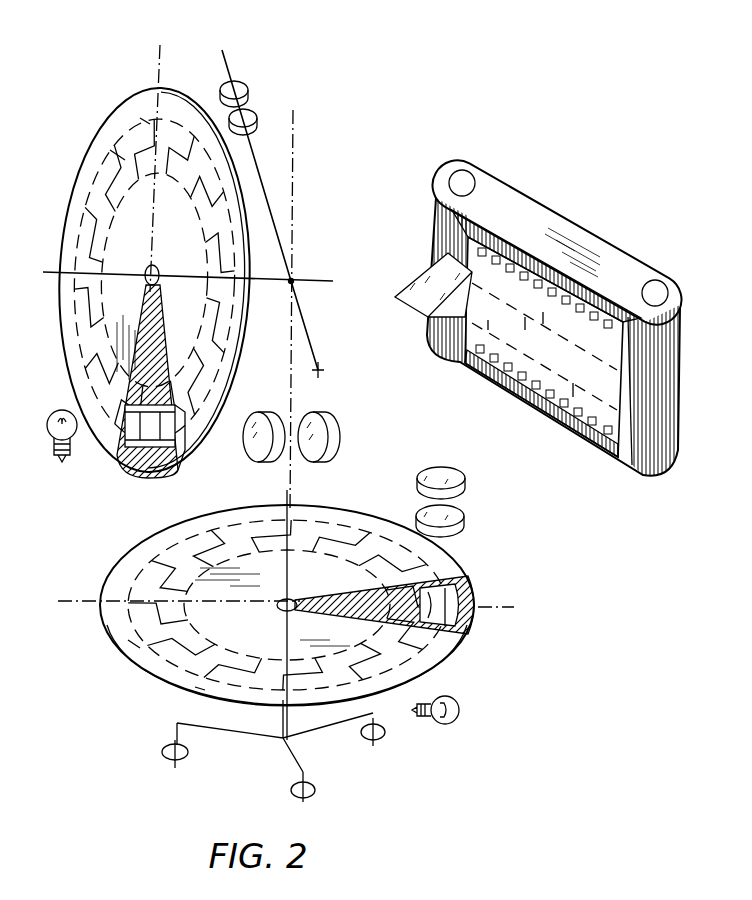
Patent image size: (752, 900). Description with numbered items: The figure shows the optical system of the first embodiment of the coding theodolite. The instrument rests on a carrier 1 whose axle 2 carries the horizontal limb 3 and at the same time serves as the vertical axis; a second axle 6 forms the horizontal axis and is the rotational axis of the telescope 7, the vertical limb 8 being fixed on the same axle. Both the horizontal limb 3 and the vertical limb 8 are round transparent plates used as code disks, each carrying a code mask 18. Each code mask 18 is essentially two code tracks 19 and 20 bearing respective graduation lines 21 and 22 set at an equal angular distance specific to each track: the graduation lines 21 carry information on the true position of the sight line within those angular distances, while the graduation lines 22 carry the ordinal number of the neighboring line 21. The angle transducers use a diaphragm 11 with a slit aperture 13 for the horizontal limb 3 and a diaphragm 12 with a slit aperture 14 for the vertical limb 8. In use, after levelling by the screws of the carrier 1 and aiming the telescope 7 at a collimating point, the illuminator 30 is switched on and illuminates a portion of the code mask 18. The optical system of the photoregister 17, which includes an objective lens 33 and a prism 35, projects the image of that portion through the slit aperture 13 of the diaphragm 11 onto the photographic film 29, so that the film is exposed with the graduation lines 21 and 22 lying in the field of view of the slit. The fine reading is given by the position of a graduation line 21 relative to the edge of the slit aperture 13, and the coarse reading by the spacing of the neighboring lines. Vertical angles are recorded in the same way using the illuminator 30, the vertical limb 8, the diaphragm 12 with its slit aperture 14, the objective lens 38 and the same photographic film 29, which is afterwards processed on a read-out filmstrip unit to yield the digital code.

The carrier 1 is at (261, 740).
The axle 2 is at (287, 722).
The horizontal limb 3 is at (452, 647).
The axle 6 is at (307, 273).
The telescope 7 is at (258, 150).
The vertical limb 8 is at (72, 323).
The diaphragm 11 is at (480, 582).
The diaphragm 12 is at (122, 473).
The slit aperture 13 is at (480, 625).
The slit aperture 14 is at (182, 467).
The photoregister 17 is at (603, 272).
The code mask 18 is at (142, 120).
The code track 19 is at (77, 262).
The code track 20 is at (88, 285).
The graduation lines 21 is at (80, 215).
The graduation lines 22 is at (118, 150).
The photographic film 29 is at (517, 297).
The illuminator 30 is at (55, 448).
The objective lens 33 is at (425, 513).
The prism 35 is at (428, 278).
The objective lens 38 is at (300, 452).